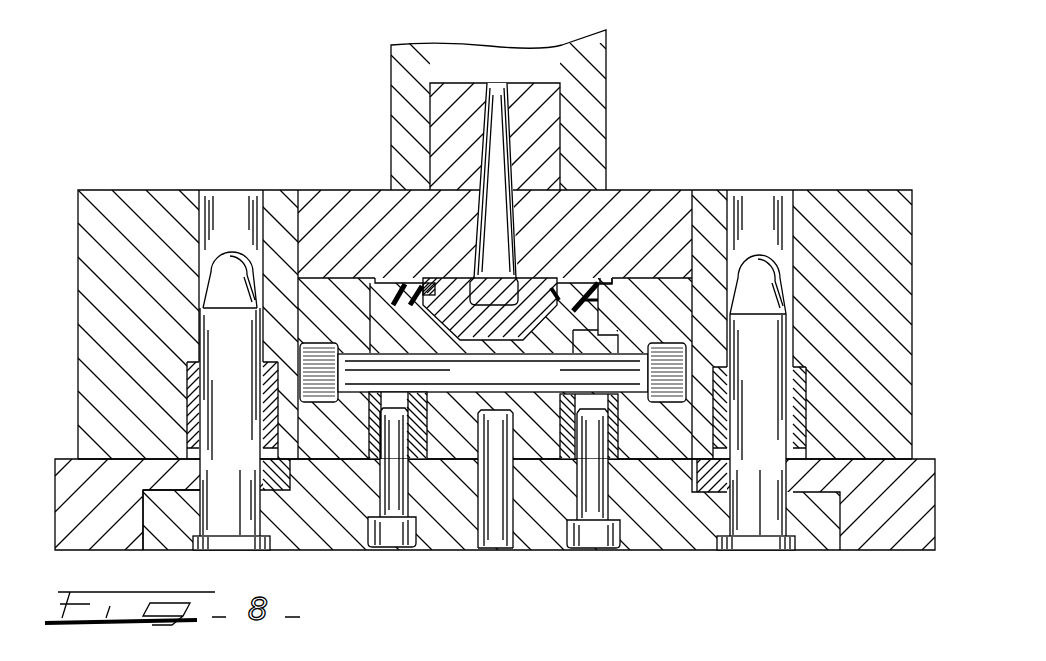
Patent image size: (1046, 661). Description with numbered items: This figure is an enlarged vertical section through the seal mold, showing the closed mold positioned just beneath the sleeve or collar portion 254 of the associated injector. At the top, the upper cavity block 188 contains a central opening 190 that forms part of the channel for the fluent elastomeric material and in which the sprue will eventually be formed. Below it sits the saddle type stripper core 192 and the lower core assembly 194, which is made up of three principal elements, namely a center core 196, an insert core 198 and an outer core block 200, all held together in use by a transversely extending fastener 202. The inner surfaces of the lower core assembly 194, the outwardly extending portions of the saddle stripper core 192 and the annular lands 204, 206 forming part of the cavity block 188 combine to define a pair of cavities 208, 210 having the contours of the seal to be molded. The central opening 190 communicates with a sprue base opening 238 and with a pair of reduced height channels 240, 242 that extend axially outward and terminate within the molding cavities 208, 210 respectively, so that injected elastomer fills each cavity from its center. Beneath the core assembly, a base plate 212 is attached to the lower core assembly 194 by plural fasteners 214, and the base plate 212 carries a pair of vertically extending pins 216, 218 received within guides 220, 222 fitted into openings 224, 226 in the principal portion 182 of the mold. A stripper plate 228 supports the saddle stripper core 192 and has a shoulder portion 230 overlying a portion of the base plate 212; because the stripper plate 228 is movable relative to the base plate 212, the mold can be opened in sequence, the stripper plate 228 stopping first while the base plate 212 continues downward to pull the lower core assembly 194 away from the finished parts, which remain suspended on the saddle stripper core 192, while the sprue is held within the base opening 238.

The principal portion of the mold 182 is at (157, 183).
The upper cavity block 188 is at (548, 128).
The central opening 190 is at (497, 98).
The saddle type stripper core 192 is at (575, 284).
The lower core assembly 194 is at (462, 470).
The center core 196 is at (543, 440).
The insert core 198 is at (342, 550).
The outer core block 200 is at (322, 333).
The transversely extending fastener 202 is at (493, 372).
The annular land 204 is at (417, 292).
The annular land 206 is at (606, 282).
The molding cavity 208 is at (391, 281).
The molding cavity 210 is at (599, 299).
The base plate 212 is at (669, 545).
The fasteners 214 is at (594, 538).
The vertically extending pin 216 is at (222, 333).
The vertically extending pin 218 is at (770, 356).
The guide 220 is at (190, 406).
The guide 222 is at (800, 412).
The opening 224 is at (203, 200).
The opening 226 is at (783, 210).
The stripper plate 228 is at (80, 528).
The shoulder portion 230 is at (170, 475).
The sprue base opening 238 is at (510, 276).
The reduced height channel 240 is at (434, 283).
The reduced height channel 242 is at (548, 292).
The sleeve or collar portion of the injector 254 is at (400, 122).